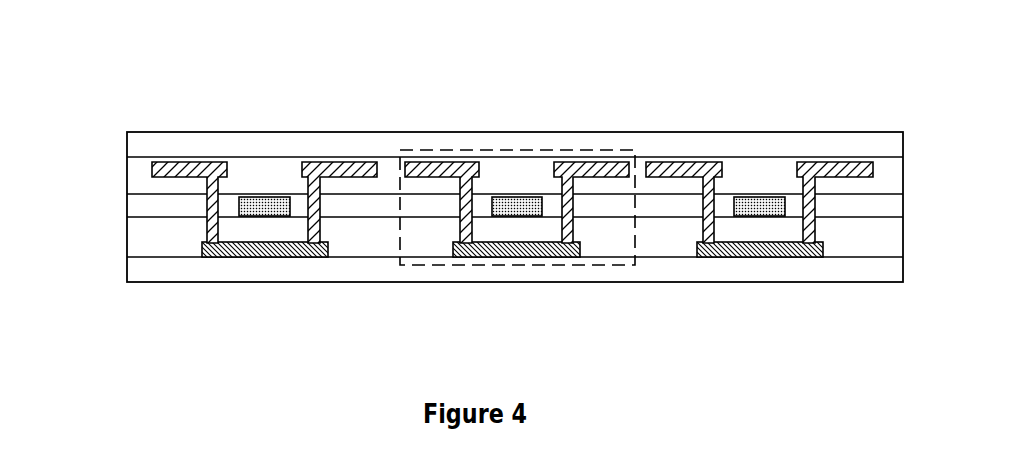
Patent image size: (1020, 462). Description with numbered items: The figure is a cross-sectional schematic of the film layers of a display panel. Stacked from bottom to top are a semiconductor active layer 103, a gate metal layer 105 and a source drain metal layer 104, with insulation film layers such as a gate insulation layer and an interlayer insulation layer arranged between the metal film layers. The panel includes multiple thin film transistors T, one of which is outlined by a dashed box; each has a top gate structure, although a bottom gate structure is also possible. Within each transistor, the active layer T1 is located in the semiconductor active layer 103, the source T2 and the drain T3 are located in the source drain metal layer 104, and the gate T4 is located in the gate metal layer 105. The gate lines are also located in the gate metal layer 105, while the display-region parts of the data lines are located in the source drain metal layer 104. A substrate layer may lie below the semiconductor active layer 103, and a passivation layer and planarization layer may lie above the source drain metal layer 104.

The semiconductor active layer 103 is at (210, 250).
The source drain metal layer 104 is at (170, 170).
The gate metal layer 105 is at (265, 210).
The thin film transistor T is at (600, 150).
The active layer T1 is at (482, 250).
The source T2 is at (443, 170).
The drain T3 is at (572, 170).
The gate T4 is at (512, 207).